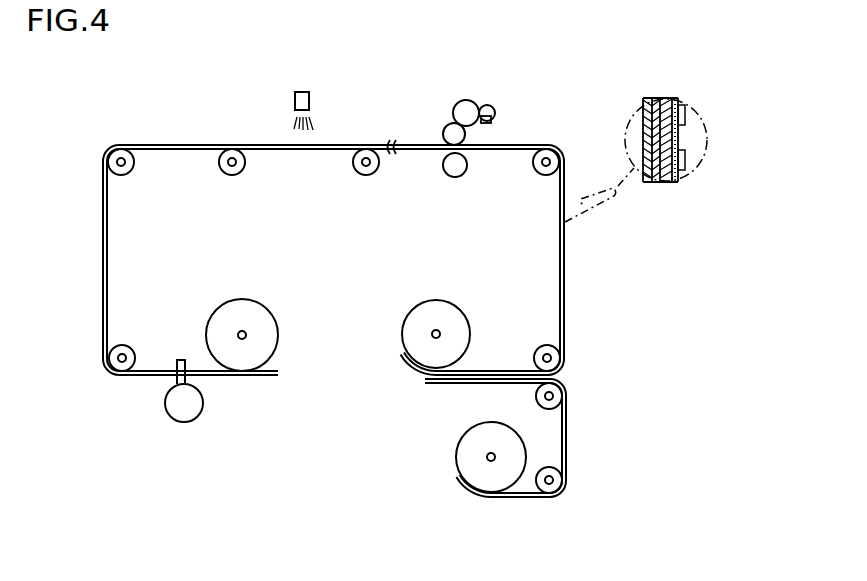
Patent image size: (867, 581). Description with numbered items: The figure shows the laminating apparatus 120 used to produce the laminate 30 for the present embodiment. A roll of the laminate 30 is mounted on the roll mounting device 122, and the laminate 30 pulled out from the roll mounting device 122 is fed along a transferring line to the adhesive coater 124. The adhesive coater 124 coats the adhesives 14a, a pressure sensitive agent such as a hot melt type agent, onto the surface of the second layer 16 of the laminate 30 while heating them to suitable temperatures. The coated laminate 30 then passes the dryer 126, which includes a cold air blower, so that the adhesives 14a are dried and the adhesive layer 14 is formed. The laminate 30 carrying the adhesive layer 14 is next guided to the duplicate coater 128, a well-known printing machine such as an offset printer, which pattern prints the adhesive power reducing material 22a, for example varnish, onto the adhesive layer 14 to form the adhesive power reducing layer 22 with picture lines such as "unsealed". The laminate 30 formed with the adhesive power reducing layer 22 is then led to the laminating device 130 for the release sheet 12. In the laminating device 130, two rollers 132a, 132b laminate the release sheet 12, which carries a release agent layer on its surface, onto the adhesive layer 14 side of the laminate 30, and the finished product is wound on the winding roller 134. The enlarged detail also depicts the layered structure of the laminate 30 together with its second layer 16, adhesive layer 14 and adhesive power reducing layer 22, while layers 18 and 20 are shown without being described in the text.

The laminating apparatus 120 is at (435, 62).
The adhesive layer 14 is at (566, 271).
The adhesives 14a is at (104, 262).
The laminate 30 is at (108, 260).
The roll mounting device 122 is at (247, 338).
The adhesive coater 124 is at (165, 404).
The dryer 126 is at (310, 97).
The duplicate coater 128 is at (468, 101).
The adhesive power reducing material 22a is at (494, 117).
The winding roller 134 is at (437, 339).
The roller 132a is at (540, 348).
The roller 132b is at (536, 395).
The release sheet 12 is at (569, 426).
The laminating device 130 is at (540, 443).
The second layer 16 is at (655, 99).
The intermediate layer 18 is at (663, 181).
The surface layer 20 is at (649, 181).
The adhesive power reducing layer 22 is at (686, 116).